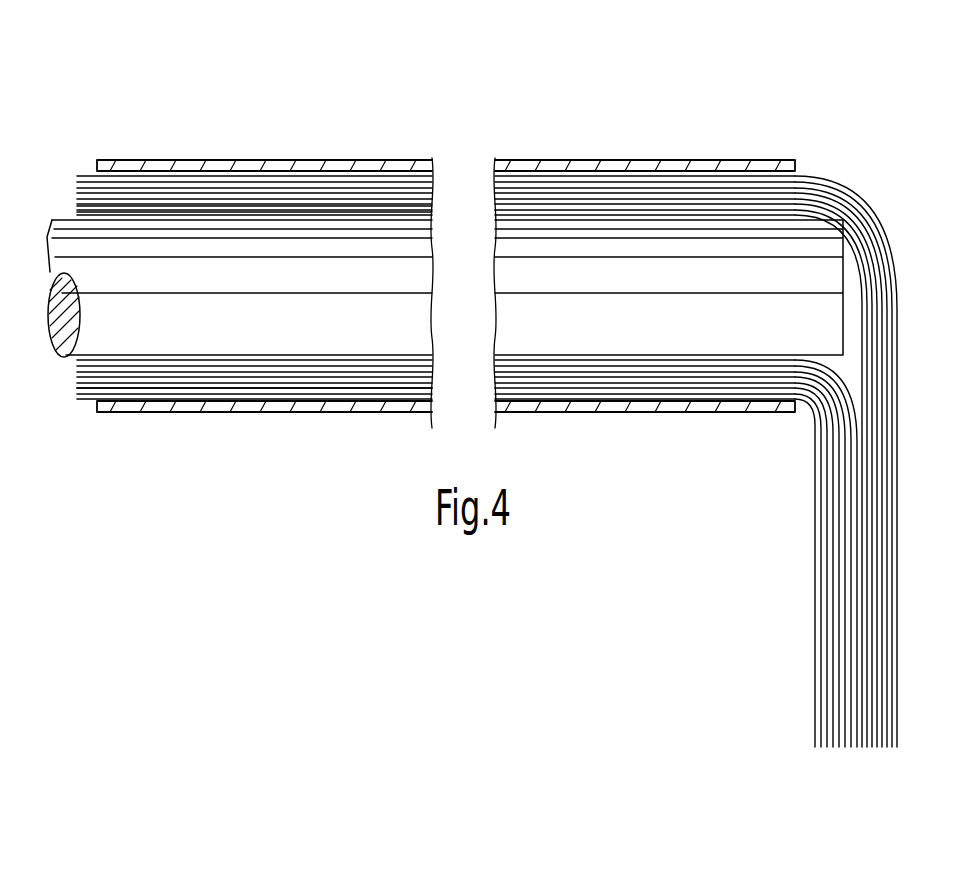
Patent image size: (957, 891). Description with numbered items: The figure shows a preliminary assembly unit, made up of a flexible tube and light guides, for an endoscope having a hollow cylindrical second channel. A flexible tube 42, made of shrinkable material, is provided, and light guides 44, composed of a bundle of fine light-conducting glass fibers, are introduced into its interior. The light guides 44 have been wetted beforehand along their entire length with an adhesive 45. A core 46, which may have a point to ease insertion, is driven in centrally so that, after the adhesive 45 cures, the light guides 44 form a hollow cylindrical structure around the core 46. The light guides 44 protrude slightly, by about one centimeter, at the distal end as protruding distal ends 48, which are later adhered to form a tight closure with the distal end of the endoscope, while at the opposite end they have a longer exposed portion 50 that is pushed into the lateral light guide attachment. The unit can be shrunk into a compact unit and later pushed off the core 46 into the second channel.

The flexible tube 42 is at (278, 160).
The light guides 44 is at (583, 196).
The adhesive 45 is at (383, 196).
The core 46 is at (48, 237).
The protruding distal ends 48 is at (85, 173).
The exposed portion 50 is at (842, 592).